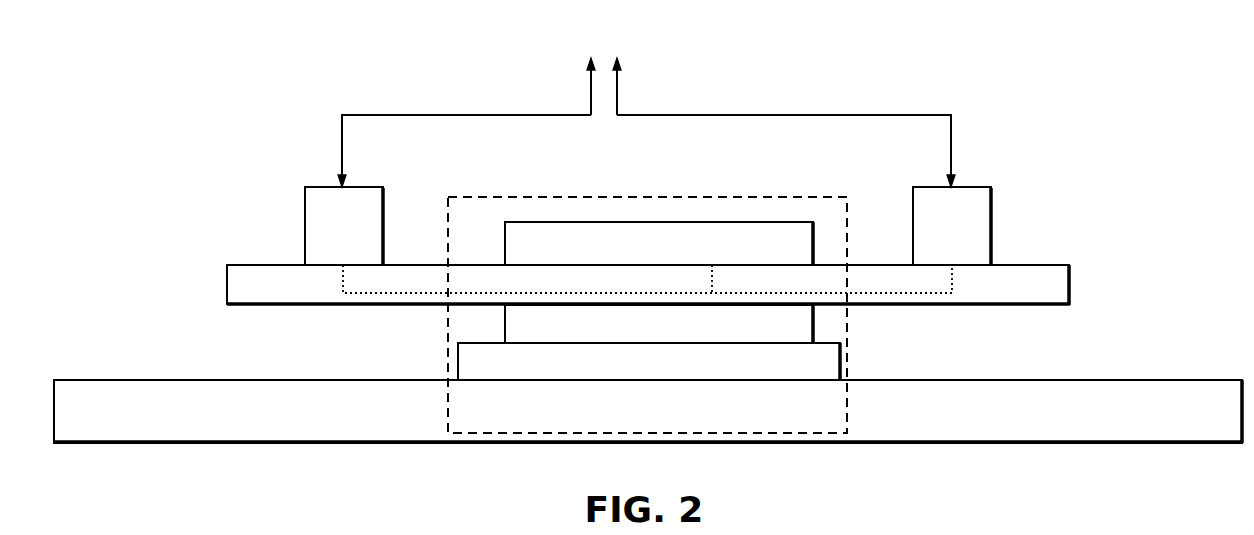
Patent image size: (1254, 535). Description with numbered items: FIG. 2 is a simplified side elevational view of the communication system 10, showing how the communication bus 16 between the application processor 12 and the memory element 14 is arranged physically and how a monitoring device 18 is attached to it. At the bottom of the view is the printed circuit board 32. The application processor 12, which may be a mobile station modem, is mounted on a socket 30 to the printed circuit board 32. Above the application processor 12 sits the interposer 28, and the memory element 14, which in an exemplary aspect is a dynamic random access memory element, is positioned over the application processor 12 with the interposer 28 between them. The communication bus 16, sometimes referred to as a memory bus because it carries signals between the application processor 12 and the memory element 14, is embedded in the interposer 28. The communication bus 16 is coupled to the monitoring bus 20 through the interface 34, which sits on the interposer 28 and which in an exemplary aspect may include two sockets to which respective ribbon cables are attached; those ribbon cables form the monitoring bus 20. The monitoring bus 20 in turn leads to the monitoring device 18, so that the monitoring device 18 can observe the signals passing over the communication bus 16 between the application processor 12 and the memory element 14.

The communication system 10 is at (847, 362).
The application processor 12 is at (813, 320).
The memory element 14 is at (813, 236).
The communication bus 16 is at (345, 307).
The monitoring device 18 is at (733, 54).
The monitoring bus 20 is at (342, 133).
The interposer 28 is at (1069, 290).
The socket 30 is at (458, 361).
The printed circuit board 32 is at (1145, 378).
The interface 34 is at (305, 235).